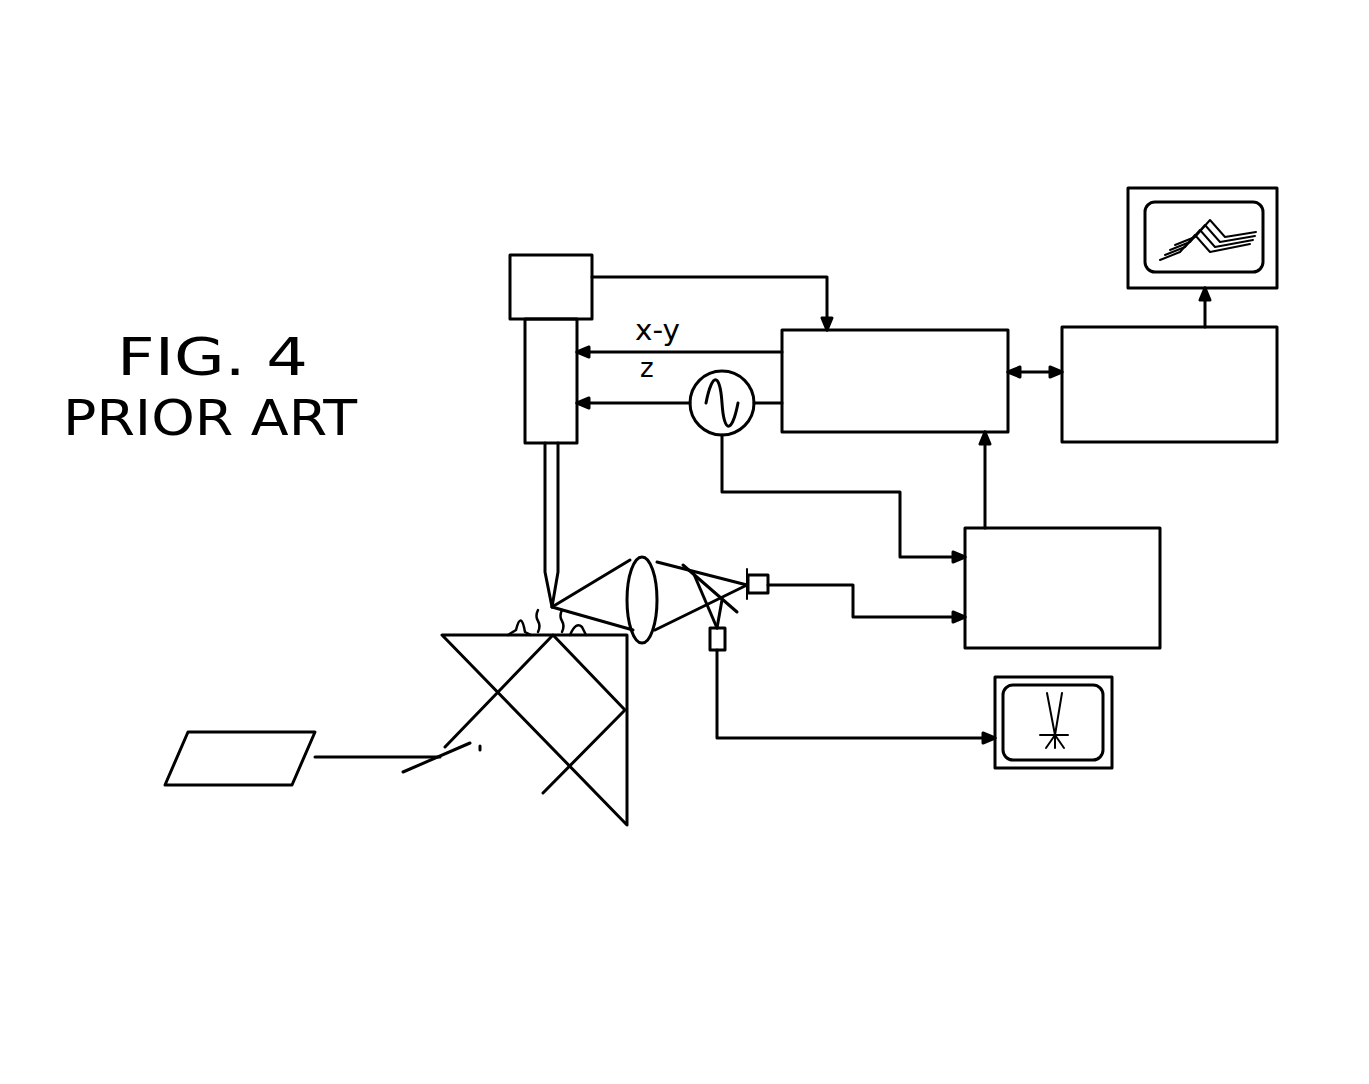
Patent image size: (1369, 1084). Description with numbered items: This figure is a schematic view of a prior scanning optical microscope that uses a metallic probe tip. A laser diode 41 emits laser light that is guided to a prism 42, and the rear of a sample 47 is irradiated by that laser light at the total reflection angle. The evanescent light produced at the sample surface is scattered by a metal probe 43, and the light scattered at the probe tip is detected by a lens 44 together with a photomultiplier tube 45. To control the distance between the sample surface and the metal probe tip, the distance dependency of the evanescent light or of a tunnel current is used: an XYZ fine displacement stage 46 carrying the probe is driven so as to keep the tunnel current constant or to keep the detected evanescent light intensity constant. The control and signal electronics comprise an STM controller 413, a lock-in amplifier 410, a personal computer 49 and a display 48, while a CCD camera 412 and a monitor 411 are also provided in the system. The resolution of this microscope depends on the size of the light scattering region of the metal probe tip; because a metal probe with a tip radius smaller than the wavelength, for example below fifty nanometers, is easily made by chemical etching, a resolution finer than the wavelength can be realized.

The laser diode 41 is at (233, 785).
The prism 42 is at (598, 777).
The metal probe 43 is at (548, 547).
The lens 44 is at (643, 572).
The photomultiplier tube 45 is at (755, 572).
The XYZ fine displacement stage 46 is at (527, 356).
The sample 47 is at (523, 625).
The display 48 is at (1277, 238).
The personal computer 49 is at (1277, 377).
The lock-in amplifier 410 is at (1160, 590).
The monitor 411 is at (1092, 730).
The CCD camera 412 is at (725, 638).
The STM controller 413 is at (950, 340).